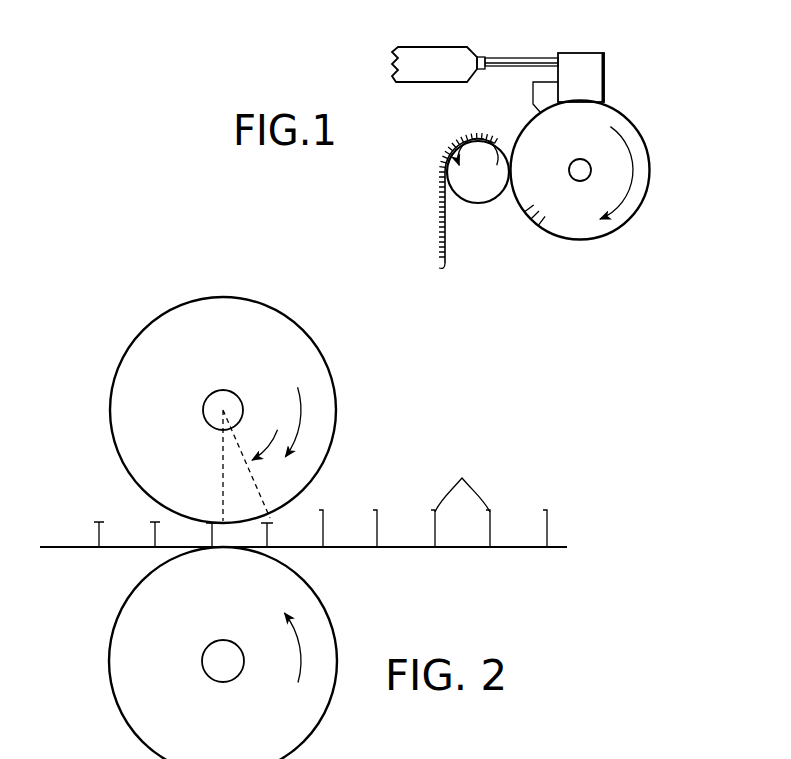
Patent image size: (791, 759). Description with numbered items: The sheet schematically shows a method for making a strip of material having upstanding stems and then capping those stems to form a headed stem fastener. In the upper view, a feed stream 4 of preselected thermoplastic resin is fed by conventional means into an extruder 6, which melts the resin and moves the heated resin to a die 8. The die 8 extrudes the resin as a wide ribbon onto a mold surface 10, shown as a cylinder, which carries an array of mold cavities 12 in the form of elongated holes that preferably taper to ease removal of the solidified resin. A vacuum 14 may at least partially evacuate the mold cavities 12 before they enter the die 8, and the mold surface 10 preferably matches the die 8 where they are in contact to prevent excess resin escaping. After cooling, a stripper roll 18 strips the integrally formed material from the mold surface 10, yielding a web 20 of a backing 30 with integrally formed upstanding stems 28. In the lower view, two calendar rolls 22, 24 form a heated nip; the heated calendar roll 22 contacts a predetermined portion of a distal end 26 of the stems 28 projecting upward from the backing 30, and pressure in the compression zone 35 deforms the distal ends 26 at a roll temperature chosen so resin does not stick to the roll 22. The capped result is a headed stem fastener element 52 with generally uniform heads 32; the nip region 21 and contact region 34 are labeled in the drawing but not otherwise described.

In FIG. 1, the feed stream 4 is at (368, 47).
In FIG. 1, the extruder 6 is at (408, 46).
In FIG. 1, the die 8 is at (581, 53).
In FIG. 1, the mold surface 10 is at (638, 130).
In FIG. 1, the mold cavities 12 is at (533, 221).
In FIG. 1, the vacuum 14 is at (533, 87).
In FIG. 1, the stripper roll 18 is at (473, 204).
In FIG. 1, the web 20 is at (425, 211).
In FIG. 2, the web 20 is at (466, 554).
In FIG. 2, the nip region 21 is at (323, 490).
In FIG. 2, the heated calendar roll 22 is at (122, 355).
In FIG. 2, the calendar roll 24 is at (122, 603).
In FIG. 2, the distal end 26 is at (462, 478).
In FIG. 1, the upstanding stems 28 is at (441, 266).
In FIG. 2, the upstanding stems 28 is at (377, 535).
In FIG. 1, the backing 30 is at (450, 245).
In FIG. 2, the backing 30 is at (562, 547).
In FIG. 2, the heads 32 is at (150, 521).
In FIG. 2, the contact region 34 is at (240, 520).
In FIG. 2, the compression zone 35 is at (213, 467).
In FIG. 2, the headed stem fastener element 52 is at (68, 548).